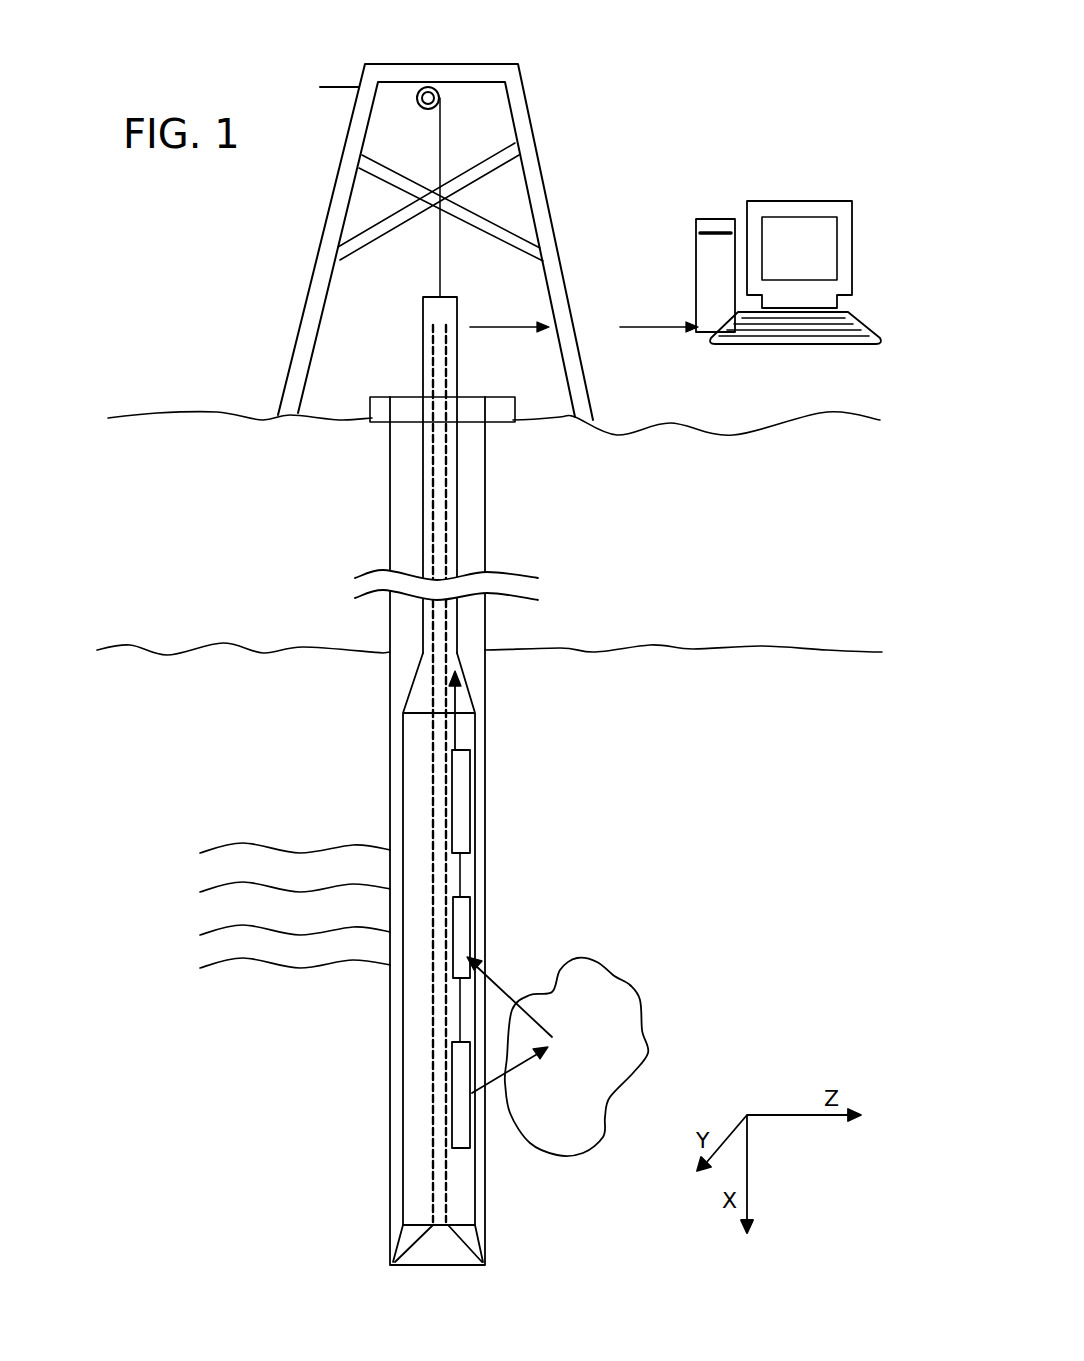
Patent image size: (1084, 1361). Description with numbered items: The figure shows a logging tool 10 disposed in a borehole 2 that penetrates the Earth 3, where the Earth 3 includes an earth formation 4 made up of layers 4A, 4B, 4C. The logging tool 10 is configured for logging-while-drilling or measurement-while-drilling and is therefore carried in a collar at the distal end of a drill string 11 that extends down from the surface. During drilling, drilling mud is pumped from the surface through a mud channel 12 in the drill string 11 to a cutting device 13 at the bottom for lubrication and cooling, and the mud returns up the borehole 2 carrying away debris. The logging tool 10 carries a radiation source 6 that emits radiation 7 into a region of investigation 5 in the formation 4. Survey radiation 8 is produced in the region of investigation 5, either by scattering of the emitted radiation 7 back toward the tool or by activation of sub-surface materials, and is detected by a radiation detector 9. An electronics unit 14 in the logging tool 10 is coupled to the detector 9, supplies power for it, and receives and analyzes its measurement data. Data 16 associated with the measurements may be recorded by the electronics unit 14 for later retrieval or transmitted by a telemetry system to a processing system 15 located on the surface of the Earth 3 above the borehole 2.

The borehole 2 is at (390, 532).
The Earth 3 is at (222, 585).
The earth formation 4 is at (220, 747).
The layer 4A is at (212, 870).
The layer 4B is at (212, 908).
The layer 4C is at (212, 947).
The region of investigation 5 is at (618, 993).
The radiation source 6 is at (465, 1130).
The radiation 7 is at (523, 1062).
The survey radiation 8 is at (493, 980).
The radiation detector 9 is at (463, 920).
The logging tool 10 is at (487, 861).
The drill string 11 is at (457, 528).
The mud channel 12 is at (432, 367).
The cutting device 13 is at (407, 1242).
The electronics unit 14 is at (463, 805).
The processing system 15 is at (763, 203).
The data 16 is at (457, 737).